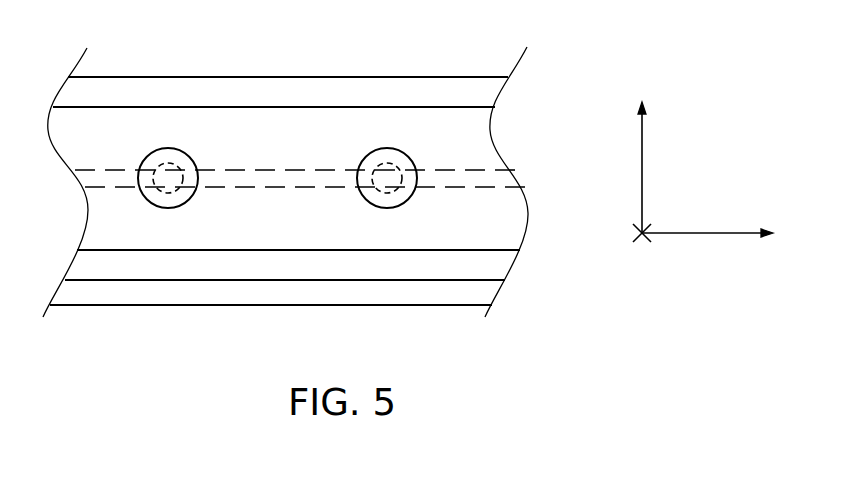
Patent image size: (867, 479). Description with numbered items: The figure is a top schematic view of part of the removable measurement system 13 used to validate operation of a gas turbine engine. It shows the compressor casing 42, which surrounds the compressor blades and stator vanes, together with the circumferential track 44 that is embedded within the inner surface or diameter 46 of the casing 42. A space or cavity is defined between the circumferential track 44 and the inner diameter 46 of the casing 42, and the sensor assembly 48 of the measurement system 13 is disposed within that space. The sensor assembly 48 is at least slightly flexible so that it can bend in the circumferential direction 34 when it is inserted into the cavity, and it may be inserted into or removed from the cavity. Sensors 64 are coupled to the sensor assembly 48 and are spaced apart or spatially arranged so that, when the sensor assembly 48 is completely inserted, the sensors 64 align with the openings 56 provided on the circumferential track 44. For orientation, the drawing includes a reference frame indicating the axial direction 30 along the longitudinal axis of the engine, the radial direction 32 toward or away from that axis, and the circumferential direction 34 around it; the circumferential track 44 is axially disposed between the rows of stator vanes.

The measurement system 13 is at (458, 155).
The axial direction 30 is at (640, 163).
The radial direction 32 is at (642, 243).
The circumferential direction 34 is at (737, 237).
The casing 42 is at (387, 265).
The circumferential track 44 is at (290, 140).
The inner surface or diameter 46 is at (437, 262).
The sensor assembly 48 is at (440, 170).
The openings 56 is at (165, 148).
The sensors 64 is at (387, 163).